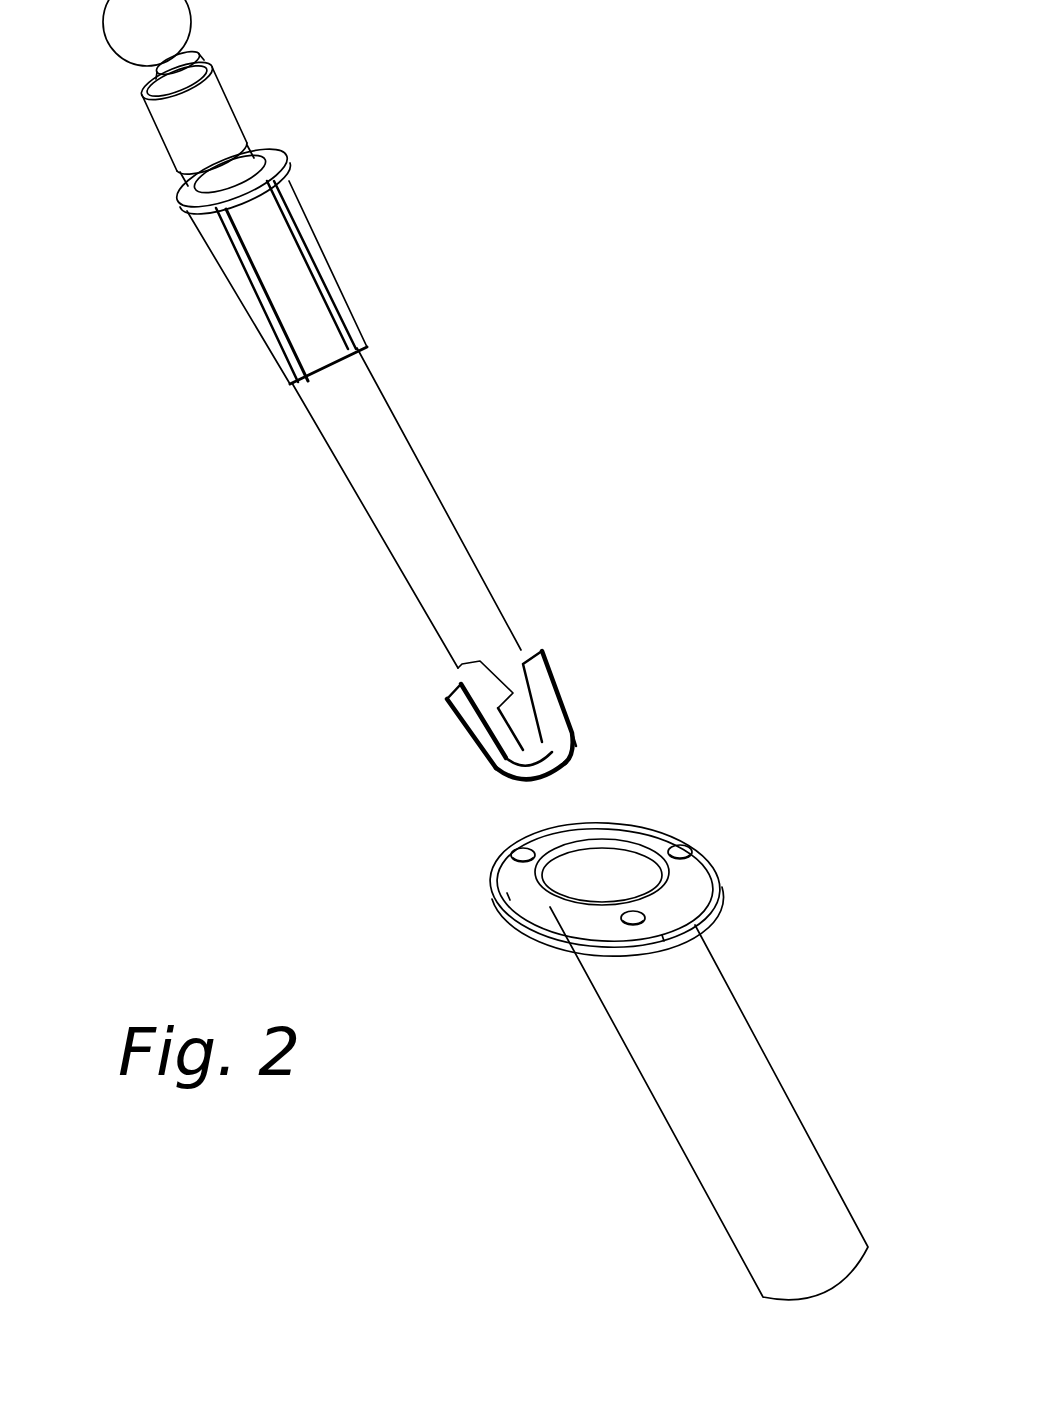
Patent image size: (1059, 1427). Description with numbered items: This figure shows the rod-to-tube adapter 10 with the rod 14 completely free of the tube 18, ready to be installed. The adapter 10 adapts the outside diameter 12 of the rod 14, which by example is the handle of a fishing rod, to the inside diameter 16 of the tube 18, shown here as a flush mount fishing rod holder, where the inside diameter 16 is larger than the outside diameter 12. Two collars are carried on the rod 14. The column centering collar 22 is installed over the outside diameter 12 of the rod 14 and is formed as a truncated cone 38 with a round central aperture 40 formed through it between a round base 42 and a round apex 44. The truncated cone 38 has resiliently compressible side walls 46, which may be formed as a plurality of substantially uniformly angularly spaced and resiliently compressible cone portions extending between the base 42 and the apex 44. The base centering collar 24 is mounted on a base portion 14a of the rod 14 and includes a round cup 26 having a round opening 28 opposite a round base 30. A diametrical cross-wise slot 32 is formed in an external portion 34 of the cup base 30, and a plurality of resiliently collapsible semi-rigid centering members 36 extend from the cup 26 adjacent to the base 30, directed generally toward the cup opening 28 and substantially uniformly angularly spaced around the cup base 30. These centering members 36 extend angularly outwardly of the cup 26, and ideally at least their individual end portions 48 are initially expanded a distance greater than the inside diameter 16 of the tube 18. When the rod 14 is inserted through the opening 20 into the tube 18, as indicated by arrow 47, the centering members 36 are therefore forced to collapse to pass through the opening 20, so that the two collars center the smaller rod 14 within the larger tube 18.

The rod-to-tube adapter 10 is at (562, 178).
The outside diameter 12 is at (448, 489).
The rod 14 is at (408, 447).
The base portion 14a is at (510, 633).
The inside diameter 16 is at (613, 850).
The tube 18 is at (704, 1040).
The opening 20 is at (660, 873).
The column centering collar 22 is at (280, 160).
The base centering collar 24 is at (448, 773).
The round cup 26 is at (513, 717).
The round opening 28 is at (460, 683).
The round base 30 is at (525, 773).
The diametrical cross-wise slot 32 is at (573, 753).
The external portion 34 is at (523, 783).
The resiliently collapsible semi-rigid centering members 36 is at (562, 738).
The truncated cone 38 is at (158, 226).
The round central aperture 40 is at (247, 182).
The round base 42 is at (178, 208).
The round apex 44 is at (342, 367).
The resiliently compressible side walls 46 is at (277, 347).
The arrow 47 is at (591, 885).
The end portions 48 is at (545, 652).